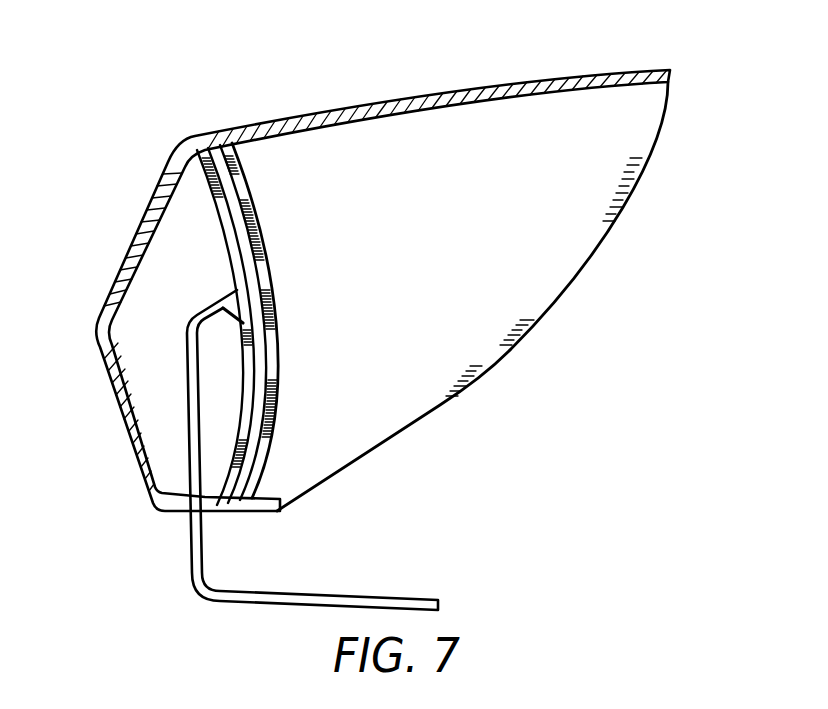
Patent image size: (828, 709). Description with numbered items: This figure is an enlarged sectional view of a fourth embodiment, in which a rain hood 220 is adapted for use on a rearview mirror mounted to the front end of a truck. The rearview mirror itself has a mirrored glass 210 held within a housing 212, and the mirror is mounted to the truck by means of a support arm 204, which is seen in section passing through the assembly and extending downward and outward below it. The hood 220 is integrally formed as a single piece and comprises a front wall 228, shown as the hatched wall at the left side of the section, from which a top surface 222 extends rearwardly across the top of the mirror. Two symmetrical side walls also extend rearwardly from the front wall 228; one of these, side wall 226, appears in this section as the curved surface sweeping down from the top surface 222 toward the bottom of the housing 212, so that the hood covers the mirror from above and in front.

The support arm 204 is at (193, 553).
The mirrored glass 210 is at (257, 253).
The housing 212 is at (232, 207).
The rain hood 220 is at (620, 232).
The top surface 222 is at (498, 70).
The side wall 226 is at (510, 350).
The front wall 228 is at (98, 356).